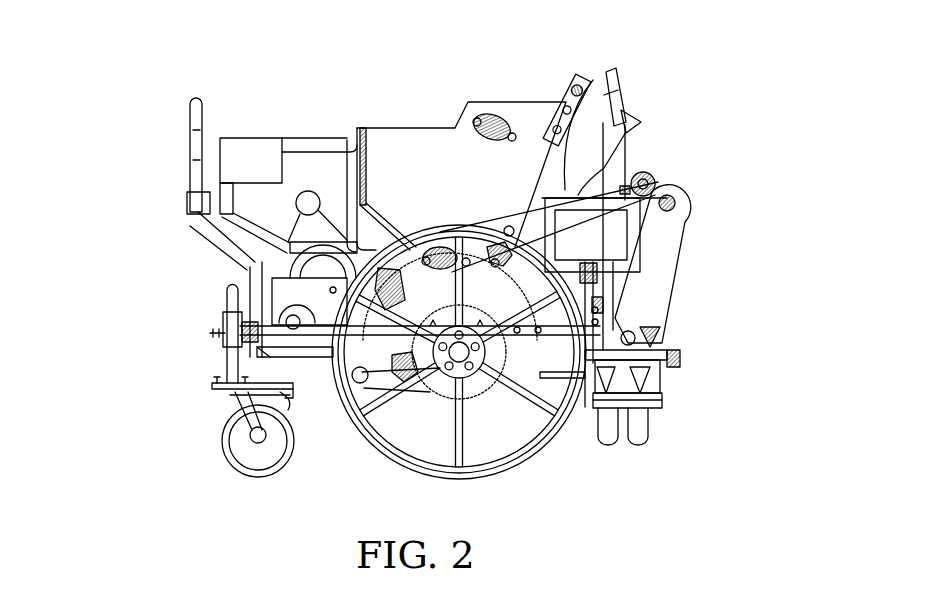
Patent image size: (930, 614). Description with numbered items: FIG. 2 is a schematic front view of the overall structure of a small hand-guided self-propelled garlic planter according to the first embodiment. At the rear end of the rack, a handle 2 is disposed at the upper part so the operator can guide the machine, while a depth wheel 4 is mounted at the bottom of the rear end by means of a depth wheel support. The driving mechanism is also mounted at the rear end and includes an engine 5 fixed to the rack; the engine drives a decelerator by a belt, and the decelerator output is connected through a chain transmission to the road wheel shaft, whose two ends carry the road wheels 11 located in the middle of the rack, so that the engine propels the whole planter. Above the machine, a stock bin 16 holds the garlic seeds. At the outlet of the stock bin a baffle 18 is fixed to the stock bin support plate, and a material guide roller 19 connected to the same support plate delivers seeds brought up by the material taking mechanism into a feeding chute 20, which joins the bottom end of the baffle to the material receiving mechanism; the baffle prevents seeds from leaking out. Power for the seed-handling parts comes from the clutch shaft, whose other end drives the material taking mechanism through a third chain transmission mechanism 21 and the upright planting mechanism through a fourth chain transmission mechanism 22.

The handle 2 is at (187, 142).
The depth wheel 4 is at (222, 440).
The engine 5 is at (310, 163).
The road wheel 11 is at (514, 472).
The stock bin 16 is at (412, 150).
The baffle 18 is at (614, 85).
The material guide roller 19 is at (573, 82).
The feeding chute 20 is at (627, 157).
The third chain transmission mechanism 21 is at (420, 242).
The fourth chain transmission mechanism 22 is at (512, 224).